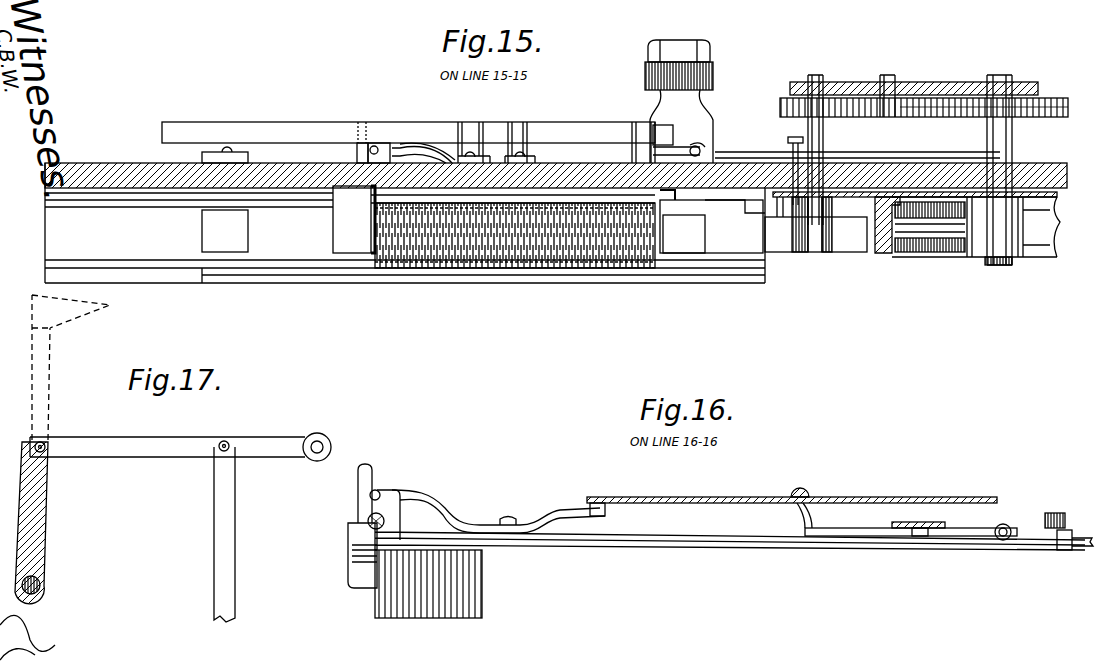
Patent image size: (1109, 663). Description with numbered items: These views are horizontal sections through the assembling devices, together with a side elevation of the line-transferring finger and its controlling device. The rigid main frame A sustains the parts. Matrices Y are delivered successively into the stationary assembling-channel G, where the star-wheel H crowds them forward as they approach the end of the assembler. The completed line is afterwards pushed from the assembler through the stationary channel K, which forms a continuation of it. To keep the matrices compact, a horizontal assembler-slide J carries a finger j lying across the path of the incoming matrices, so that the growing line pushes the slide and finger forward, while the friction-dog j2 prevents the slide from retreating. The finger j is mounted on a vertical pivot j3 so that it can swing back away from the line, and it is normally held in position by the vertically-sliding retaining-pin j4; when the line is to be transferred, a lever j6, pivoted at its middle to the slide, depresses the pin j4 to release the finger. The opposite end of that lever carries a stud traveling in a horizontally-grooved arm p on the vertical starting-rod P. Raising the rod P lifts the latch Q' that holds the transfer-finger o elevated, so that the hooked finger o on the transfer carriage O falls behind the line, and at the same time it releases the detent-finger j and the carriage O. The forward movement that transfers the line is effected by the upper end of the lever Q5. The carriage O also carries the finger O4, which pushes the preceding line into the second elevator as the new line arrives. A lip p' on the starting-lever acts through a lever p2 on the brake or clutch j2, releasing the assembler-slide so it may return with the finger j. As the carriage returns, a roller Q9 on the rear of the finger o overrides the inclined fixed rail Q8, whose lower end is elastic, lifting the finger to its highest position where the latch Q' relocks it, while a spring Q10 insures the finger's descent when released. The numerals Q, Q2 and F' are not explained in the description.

In FIG. 15, the main frame A is at (78, 163).
In FIG. 15, the transfer carriage O is at (292, 162).
In FIG. 15, the finger O4 is at (224, 245).
In FIG. 15, the stationary channel K is at (290, 227).
In FIG. 15, the block Q is at (711, 221).
In FIG. 15, the block Q2 is at (354, 231).
In FIG. 15, the latch Q' is at (735, 214).
In FIG. 17, the latch Q' is at (180, 438).
In FIG. 15, the lever Q5 is at (714, 78).
In FIG. 15, the fixed rail Q8 is at (410, 125).
In FIG. 15, the roller Q9 is at (673, 136).
In FIG. 15, the spring Q10 is at (697, 156).
In FIG. 15, the assembling-channel G is at (535, 252).
In FIG. 15, the star-wheel H is at (816, 224).
In FIG. 15, the bracket F' is at (893, 239).
In FIG. 15, the horizontally-grooved arm p is at (857, 148).
In FIG. 16, the horizontally-grooved arm p is at (792, 496).
In FIG. 15, the starting-rod P is at (789, 140).
In FIG. 17, the starting-rod P is at (222, 533).
In FIG. 16, the starting-rod P is at (805, 492).
In FIG. 16, the lip p' is at (789, 516).
In FIG. 16, the lever p2 is at (872, 532).
In FIG. 15, the finger j is at (358, 124).
In FIG. 16, the finger j is at (352, 564).
In FIG. 16, the friction-dog j2 is at (1060, 552).
In FIG. 16, the vertical pivot j3 is at (368, 523).
In FIG. 15, the retaining-pin j4 is at (376, 146).
In FIG. 16, the retaining-pin j4 is at (378, 491).
In FIG. 15, the lever j6 is at (440, 150).
In FIG. 16, the lever j6 is at (445, 506).
In FIG. 16, the assembler-slide J is at (620, 542).
In FIG. 16, the matrices Y is at (425, 600).
In FIG. 17, the transfer-finger o is at (59, 449).